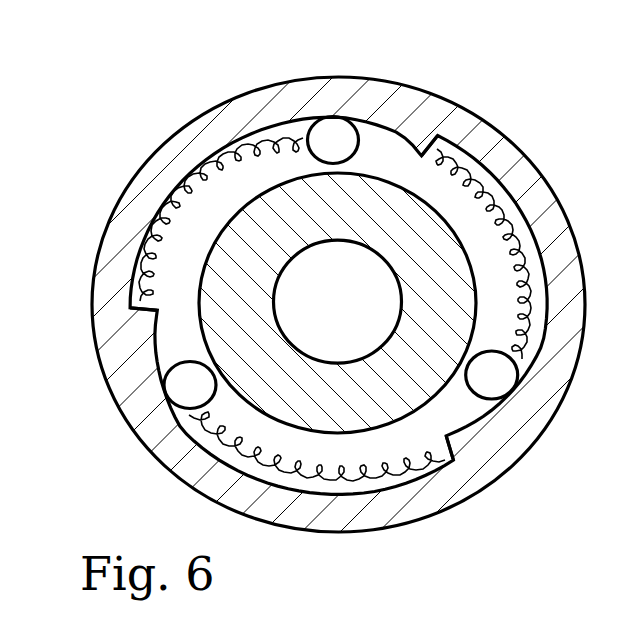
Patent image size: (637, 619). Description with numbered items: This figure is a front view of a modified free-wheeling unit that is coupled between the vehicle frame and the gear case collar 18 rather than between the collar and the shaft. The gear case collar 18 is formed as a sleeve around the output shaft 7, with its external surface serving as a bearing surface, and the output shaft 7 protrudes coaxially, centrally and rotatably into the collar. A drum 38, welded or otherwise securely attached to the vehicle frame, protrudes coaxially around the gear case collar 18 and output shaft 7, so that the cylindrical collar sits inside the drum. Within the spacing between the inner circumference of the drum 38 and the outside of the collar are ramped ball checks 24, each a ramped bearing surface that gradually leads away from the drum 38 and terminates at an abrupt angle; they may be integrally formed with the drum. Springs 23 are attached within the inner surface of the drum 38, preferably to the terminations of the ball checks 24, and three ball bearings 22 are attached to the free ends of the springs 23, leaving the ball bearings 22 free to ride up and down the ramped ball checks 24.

The output shaft 7 is at (347, 320).
The gear case collar 18 is at (267, 191).
The ball bearings 22 is at (322, 118).
The springs 23 is at (155, 213).
The ramped ball checks 24 is at (307, 293).
The drum 38 is at (157, 151).